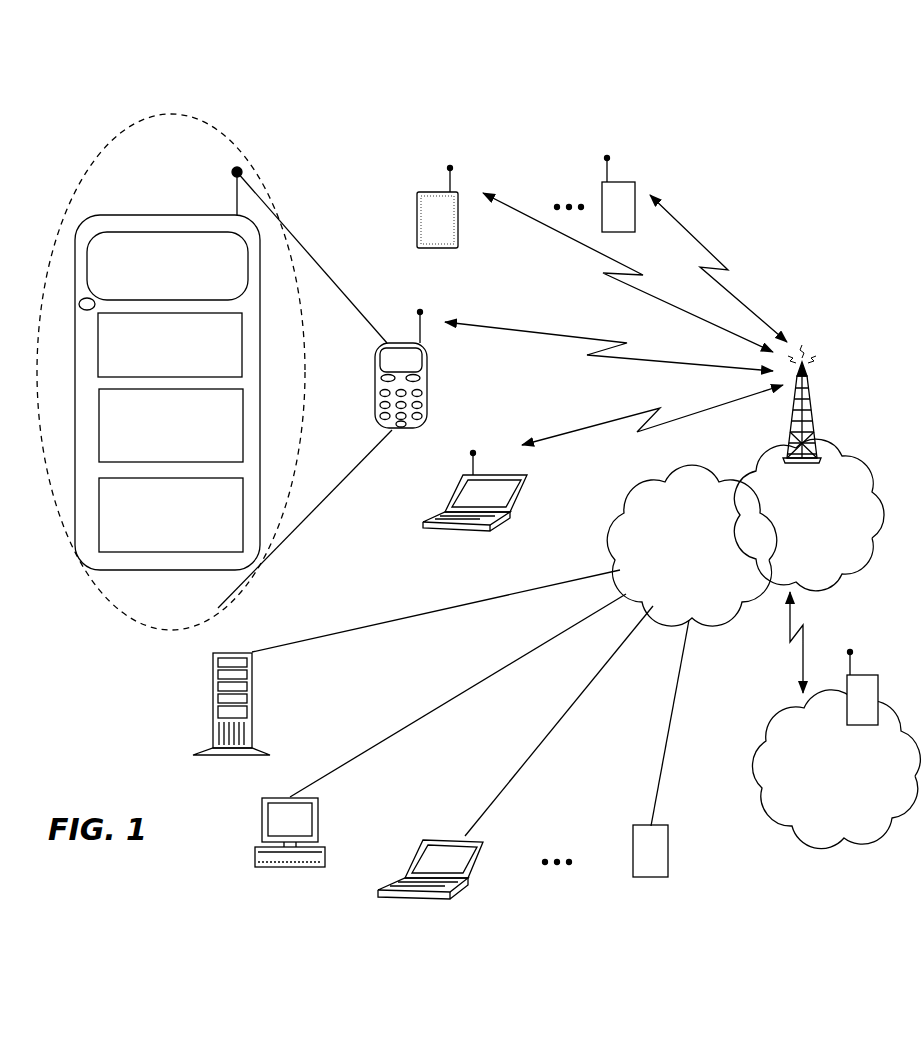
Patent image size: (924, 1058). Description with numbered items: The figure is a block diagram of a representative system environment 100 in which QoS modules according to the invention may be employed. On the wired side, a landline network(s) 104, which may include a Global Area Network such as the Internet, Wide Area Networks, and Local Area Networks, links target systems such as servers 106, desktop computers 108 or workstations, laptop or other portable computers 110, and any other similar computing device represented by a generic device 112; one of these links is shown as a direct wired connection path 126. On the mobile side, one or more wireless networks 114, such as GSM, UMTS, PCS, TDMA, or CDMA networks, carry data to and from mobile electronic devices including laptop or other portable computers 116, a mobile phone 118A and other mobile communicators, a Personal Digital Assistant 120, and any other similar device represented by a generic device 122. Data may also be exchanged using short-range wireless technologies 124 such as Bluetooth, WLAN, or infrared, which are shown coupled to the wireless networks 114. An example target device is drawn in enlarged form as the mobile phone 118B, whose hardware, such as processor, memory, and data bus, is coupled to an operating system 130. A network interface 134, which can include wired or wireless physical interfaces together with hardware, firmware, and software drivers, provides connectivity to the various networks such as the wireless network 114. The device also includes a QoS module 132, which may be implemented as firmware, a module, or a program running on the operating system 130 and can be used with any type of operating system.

The system environment 100 is at (763, 122).
The landline network(s) 104 is at (677, 473).
The servers 106 is at (258, 700).
The desktop computers 108 is at (313, 798).
The laptop or other portable computers 110 is at (470, 840).
The generic device 112 is at (636, 825).
The wireless network(s) 114 is at (753, 470).
The laptop or other portable computers 116 is at (522, 497).
The mobile phone 118A is at (427, 385).
The mobile phone 118B is at (208, 379).
The Personal Digital Assistant 120 is at (432, 190).
The generic device 122 is at (618, 182).
The short-range wireless technologies 124 is at (858, 845).
The connection path 126 is at (664, 754).
The operating system 130 is at (243, 440).
The QoS module 132 is at (213, 553).
The network interface 134 is at (243, 338).